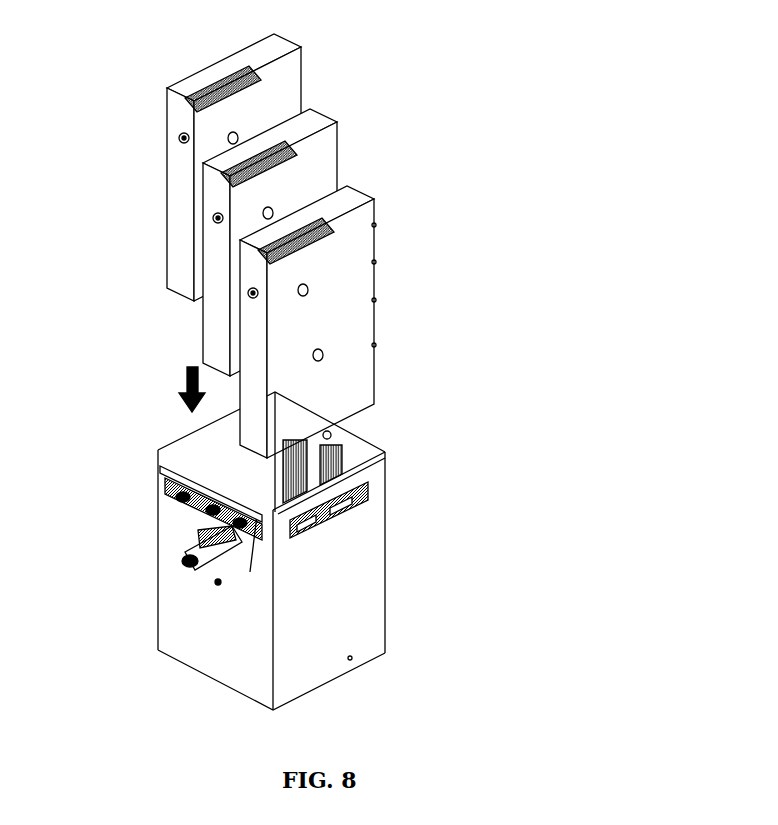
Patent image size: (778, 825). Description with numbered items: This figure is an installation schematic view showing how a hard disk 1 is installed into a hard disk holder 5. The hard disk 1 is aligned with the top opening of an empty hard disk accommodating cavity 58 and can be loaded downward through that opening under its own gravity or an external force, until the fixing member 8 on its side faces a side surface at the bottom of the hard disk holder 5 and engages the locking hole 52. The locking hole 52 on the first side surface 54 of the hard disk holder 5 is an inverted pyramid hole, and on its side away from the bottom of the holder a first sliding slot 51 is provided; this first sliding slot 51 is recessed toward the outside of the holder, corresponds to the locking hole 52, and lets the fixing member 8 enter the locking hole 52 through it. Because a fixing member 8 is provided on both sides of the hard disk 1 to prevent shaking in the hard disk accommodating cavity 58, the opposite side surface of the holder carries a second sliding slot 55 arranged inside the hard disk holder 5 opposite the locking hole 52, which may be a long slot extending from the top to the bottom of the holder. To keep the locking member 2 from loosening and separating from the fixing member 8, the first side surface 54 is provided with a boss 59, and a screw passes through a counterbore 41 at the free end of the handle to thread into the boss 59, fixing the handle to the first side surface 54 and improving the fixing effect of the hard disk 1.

The hard disk 1 is at (335, 247).
The fixing member 8 is at (180, 137).
The locking member 2 is at (333, 508).
The hard disk holder 5 is at (249, 551).
The first sliding slot 51 is at (172, 470).
The locking hole 52 is at (176, 494).
The first side surface 54 is at (184, 622).
The second sliding slot 55 is at (332, 452).
The hard disk accommodating cavity 58 is at (280, 423).
The boss 59 is at (224, 582).
The counterbore 41 is at (182, 564).